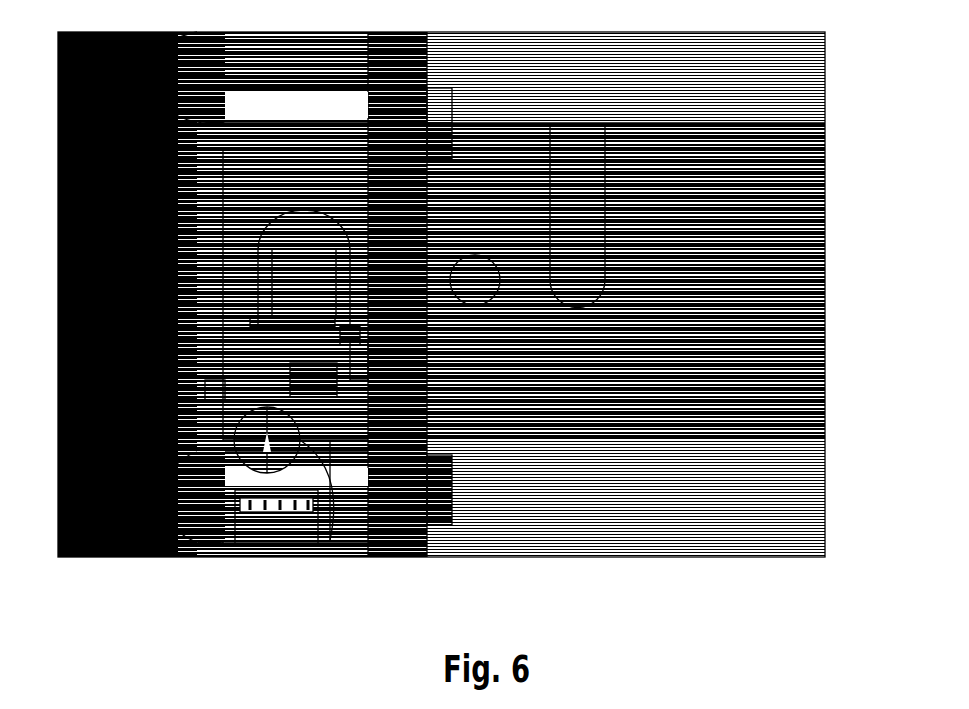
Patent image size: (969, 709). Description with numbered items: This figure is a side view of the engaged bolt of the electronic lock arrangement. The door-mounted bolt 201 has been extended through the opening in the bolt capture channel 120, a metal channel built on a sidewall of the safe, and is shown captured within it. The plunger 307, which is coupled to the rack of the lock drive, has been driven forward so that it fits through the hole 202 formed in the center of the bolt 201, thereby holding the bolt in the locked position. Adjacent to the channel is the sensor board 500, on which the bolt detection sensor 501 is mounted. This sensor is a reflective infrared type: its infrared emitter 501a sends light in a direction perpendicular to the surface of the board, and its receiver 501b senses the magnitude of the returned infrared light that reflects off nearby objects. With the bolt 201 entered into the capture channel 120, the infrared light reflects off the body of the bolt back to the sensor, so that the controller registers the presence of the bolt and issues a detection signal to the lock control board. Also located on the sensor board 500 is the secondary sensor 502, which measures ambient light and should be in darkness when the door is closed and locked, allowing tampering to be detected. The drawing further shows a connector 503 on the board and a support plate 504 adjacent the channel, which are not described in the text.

The bolt capture channel 120 is at (368, 358).
The bolt 201 is at (545, 372).
The hole 202 is at (440, 345).
The plunger 307 is at (298, 282).
The sensor board 500 is at (330, 470).
The bolt detection sensor 501 is at (245, 425).
The infrared emitter 501a is at (305, 355).
The receiver 501b is at (318, 305).
The secondary sensor 502 is at (212, 393).
The connector 503 is at (277, 528).
The support plate 504 is at (396, 400).